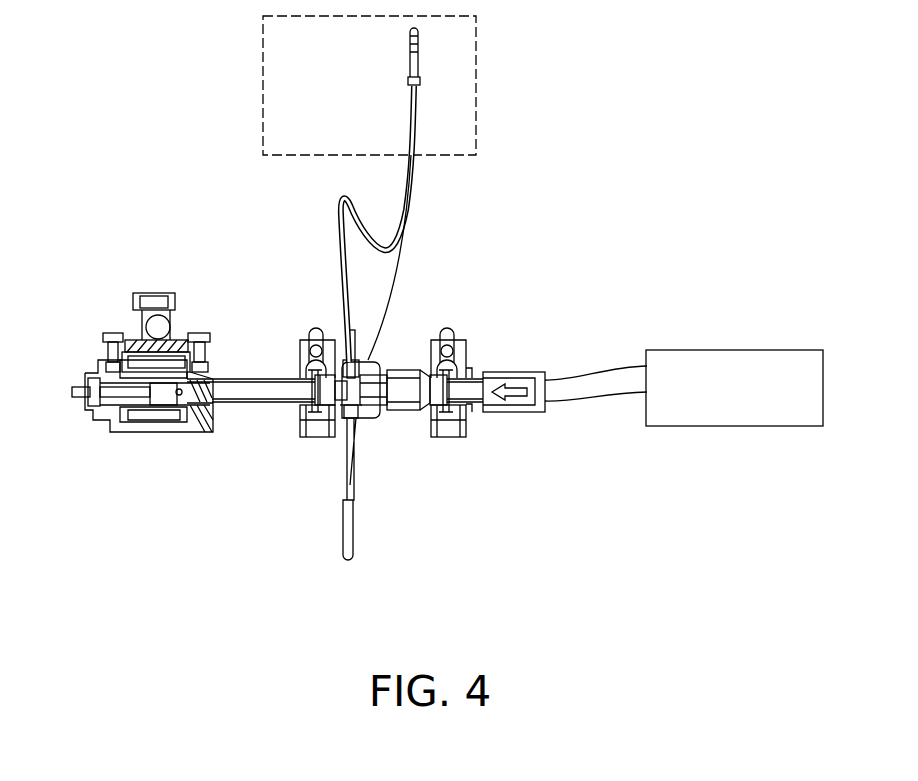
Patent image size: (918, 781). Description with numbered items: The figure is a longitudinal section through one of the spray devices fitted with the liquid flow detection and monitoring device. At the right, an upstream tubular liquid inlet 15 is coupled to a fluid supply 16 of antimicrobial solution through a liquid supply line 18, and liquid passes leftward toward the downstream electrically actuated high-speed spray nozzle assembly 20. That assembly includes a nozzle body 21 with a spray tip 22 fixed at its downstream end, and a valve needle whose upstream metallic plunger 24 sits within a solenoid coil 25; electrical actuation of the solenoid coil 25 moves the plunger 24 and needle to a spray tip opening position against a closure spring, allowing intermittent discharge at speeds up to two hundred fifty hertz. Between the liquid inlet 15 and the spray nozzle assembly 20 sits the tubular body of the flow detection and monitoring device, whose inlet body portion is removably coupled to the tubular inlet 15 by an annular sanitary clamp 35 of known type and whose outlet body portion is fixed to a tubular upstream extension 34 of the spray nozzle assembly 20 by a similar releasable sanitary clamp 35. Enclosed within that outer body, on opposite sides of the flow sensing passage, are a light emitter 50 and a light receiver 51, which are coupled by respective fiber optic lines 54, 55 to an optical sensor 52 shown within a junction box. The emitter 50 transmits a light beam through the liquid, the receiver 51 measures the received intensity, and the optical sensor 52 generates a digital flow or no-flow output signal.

The tubular liquid inlet 15 is at (500, 372).
The fluid supply 16 is at (678, 350).
The liquid supply line 18 is at (592, 368).
The spray nozzle assembly 20 is at (201, 430).
The nozzle body 21 is at (122, 425).
The spray tip 22 is at (105, 426).
The plunger 24 is at (120, 425).
The solenoid coil 25 is at (157, 413).
The tubular upstream extension 34 is at (268, 402).
The sanitary clamp 35 is at (322, 440).
The light emitter 50 is at (346, 340).
The light receiver 51 is at (355, 414).
The optical sensor 52 is at (418, 65).
The fiber optic line 54 is at (367, 220).
The fiber optic line 55 is at (352, 496).